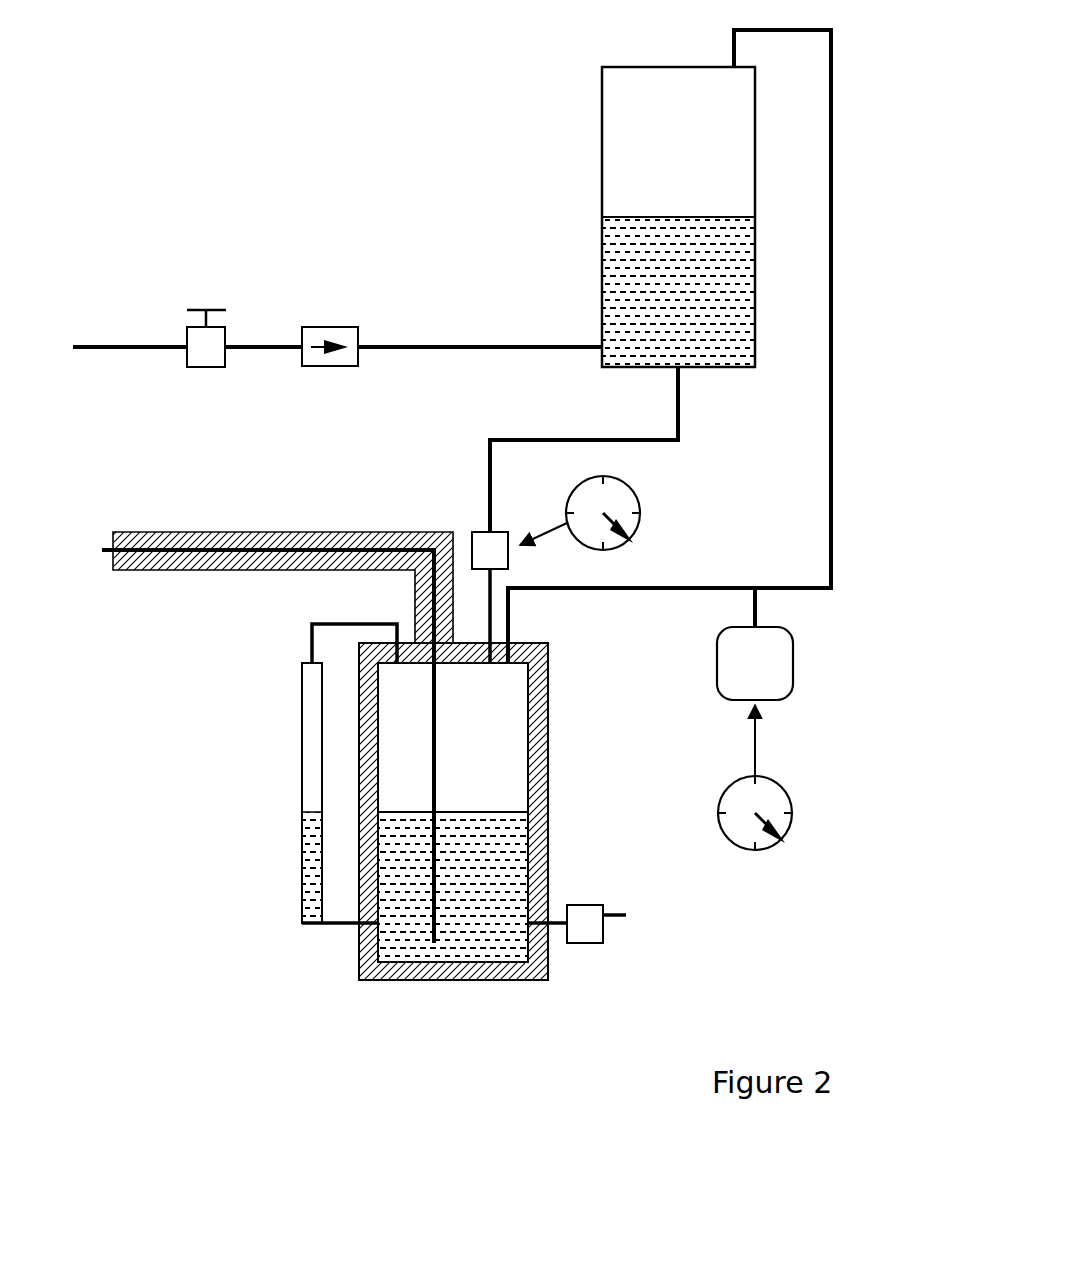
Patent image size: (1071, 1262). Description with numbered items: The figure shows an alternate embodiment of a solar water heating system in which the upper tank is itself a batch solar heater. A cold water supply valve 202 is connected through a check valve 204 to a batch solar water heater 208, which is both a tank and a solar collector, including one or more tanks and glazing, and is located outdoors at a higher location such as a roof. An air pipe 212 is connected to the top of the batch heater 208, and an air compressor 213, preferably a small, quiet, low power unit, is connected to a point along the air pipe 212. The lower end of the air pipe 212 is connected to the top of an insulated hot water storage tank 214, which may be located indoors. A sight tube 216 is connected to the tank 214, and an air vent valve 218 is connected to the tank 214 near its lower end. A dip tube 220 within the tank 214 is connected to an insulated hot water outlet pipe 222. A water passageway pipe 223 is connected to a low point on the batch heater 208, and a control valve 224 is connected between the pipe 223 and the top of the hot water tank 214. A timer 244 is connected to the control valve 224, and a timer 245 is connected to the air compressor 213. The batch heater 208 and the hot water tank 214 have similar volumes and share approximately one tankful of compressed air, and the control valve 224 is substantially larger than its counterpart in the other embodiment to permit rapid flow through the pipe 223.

The cold water supply valve 202 is at (187, 330).
The check valve 204 is at (318, 327).
The batch solar water heater 208 is at (602, 168).
The air pipe 212 is at (831, 458).
The air compressor 213 is at (793, 652).
The insulated hot water storage tank 214 is at (548, 760).
The sight tube 216 is at (302, 745).
The air vent valve 218 is at (593, 943).
The dip tube 220 is at (435, 725).
The insulated hot water outlet pipe 222 is at (263, 532).
The water passageway pipe 223 is at (558, 440).
The control valve 224 is at (472, 532).
The timer 244 is at (640, 502).
The timer 245 is at (790, 800).